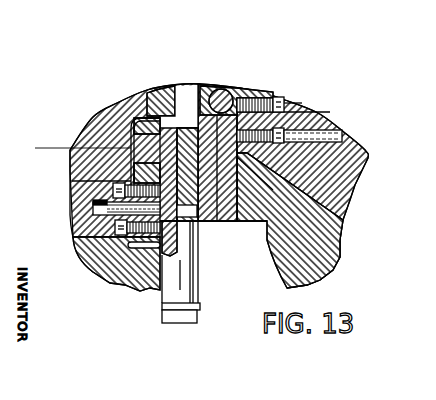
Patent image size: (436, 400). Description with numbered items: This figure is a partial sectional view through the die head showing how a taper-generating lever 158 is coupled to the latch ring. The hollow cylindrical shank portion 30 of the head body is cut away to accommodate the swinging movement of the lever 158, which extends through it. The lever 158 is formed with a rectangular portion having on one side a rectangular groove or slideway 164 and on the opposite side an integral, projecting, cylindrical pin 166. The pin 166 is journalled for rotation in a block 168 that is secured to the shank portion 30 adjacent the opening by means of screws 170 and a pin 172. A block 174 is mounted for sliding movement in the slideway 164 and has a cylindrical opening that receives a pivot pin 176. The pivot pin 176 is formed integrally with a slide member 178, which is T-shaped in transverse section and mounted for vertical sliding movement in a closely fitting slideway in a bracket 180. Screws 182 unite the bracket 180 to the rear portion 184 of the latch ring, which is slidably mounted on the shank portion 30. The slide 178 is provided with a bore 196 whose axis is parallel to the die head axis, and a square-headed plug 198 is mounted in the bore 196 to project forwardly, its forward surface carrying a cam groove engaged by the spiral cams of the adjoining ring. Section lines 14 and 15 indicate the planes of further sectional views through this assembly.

The section line 14- 14 is at (38, 162).
The section line 15- 15 is at (100, 210).
The shank portion 30 is at (330, 268).
The taper-generating lever 158 is at (199, 318).
The slideway 164 is at (200, 223).
The cylindrical pin 166 is at (117, 117).
The block 168 is at (145, 99).
The screws 170 is at (80, 185).
The pin 172 is at (93, 201).
The block 174 is at (185, 100).
The pivot pin 176 is at (197, 177).
The slide member 178 is at (206, 86).
The bracket 180 is at (248, 96).
The screws 182 is at (279, 97).
The rear portion of latch ring 184 is at (80, 131).
The bore 196 is at (205, 125).
The square-headed plug 198 is at (226, 89).